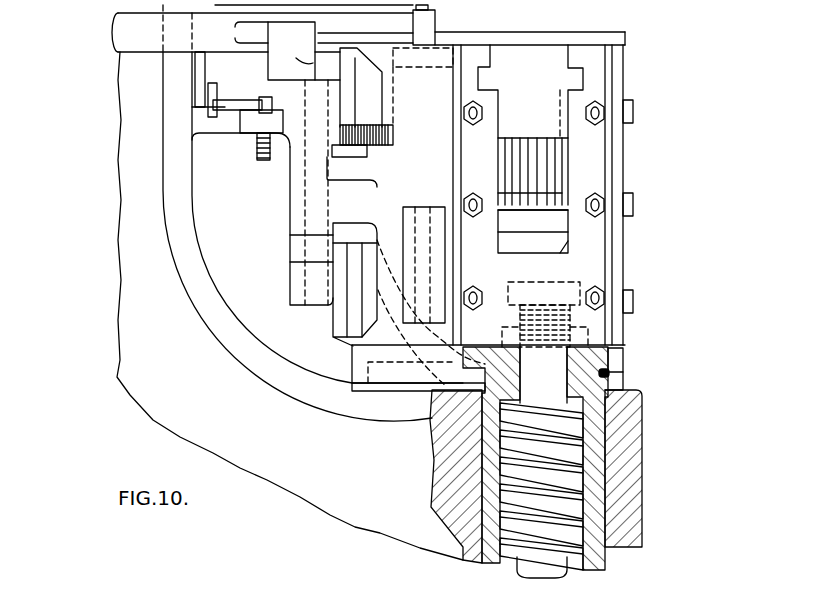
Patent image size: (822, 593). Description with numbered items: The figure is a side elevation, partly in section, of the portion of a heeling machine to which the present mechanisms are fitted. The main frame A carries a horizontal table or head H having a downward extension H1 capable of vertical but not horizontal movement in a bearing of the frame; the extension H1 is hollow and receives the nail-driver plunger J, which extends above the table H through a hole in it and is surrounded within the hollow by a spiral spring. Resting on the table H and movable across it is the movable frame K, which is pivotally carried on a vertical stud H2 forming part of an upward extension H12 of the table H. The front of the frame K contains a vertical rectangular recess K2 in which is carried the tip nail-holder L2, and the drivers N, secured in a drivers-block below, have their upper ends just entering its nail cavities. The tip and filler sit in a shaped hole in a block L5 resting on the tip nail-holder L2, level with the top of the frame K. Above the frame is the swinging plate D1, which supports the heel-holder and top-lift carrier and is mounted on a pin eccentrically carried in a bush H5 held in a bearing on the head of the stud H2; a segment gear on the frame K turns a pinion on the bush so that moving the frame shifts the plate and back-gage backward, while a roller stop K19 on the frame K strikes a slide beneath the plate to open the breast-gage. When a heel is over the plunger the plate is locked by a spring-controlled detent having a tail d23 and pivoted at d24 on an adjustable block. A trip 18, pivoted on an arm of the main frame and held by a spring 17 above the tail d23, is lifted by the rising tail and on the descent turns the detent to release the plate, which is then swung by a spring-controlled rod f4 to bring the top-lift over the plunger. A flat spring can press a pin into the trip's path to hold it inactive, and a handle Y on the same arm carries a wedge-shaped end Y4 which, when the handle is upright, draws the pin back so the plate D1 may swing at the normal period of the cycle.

The spring-controlled rod f4 is at (215, 8).
The handle Y is at (192, 65).
The wedge-shaped end Y4 is at (193, 88).
The spring 17 is at (204, 72).
The trip 18 is at (218, 86).
The tail d23 is at (231, 101).
The detent pivot d24 is at (258, 160).
The vertical stud H2 is at (308, 203).
The upward extension H12 is at (390, 284).
The roller stop K19 is at (347, 90).
The bush H5 is at (390, 134).
The block L5 is at (502, 50).
The swinging plate D1 is at (570, 43).
The tip nail-holder L2 is at (545, 74).
The recess K2 is at (555, 156).
The drivers N is at (535, 170).
The movable frame K is at (599, 212).
The table H is at (622, 353).
The nail-driver plunger J is at (553, 371).
The downward extension H1 is at (600, 467).
The main frame A is at (333, 485).